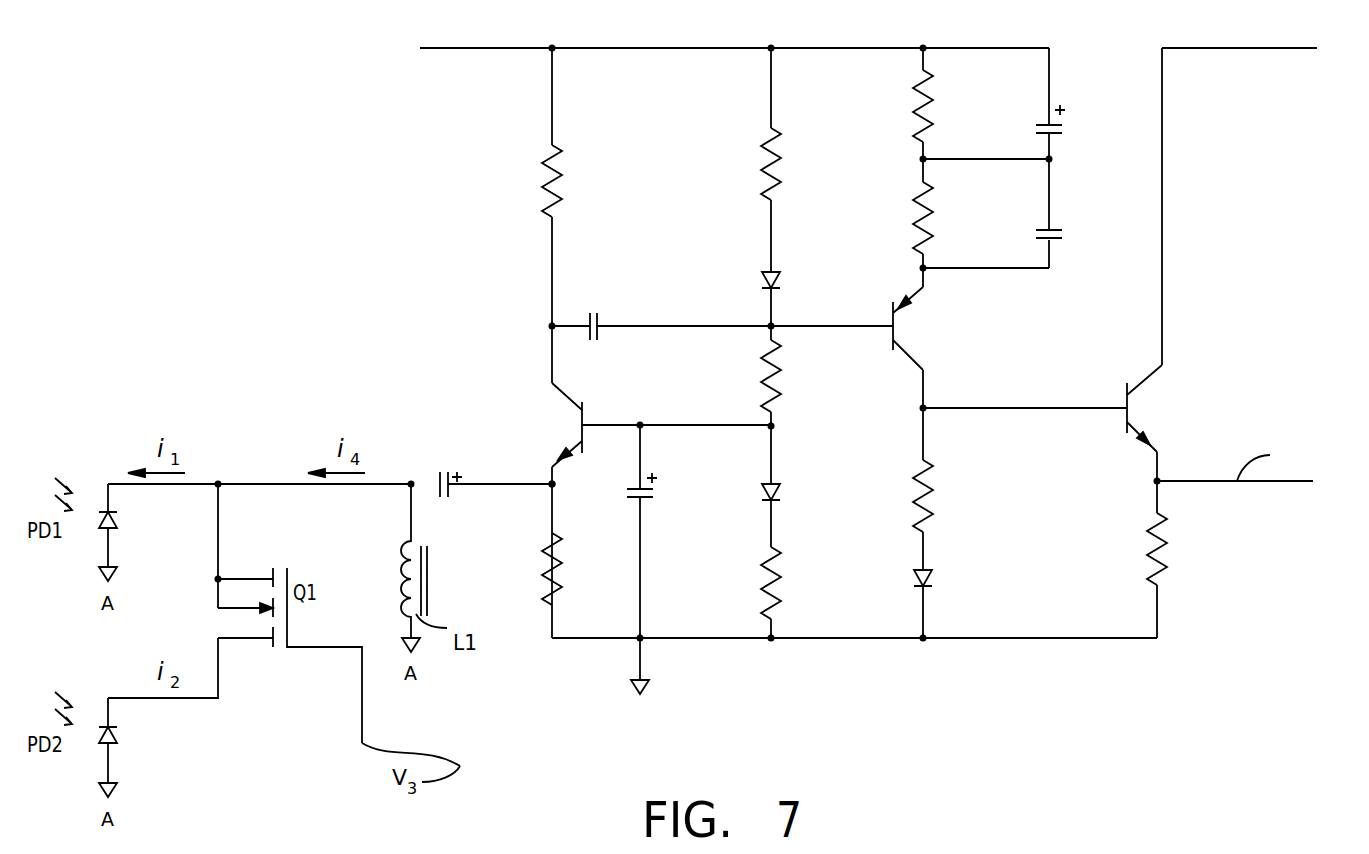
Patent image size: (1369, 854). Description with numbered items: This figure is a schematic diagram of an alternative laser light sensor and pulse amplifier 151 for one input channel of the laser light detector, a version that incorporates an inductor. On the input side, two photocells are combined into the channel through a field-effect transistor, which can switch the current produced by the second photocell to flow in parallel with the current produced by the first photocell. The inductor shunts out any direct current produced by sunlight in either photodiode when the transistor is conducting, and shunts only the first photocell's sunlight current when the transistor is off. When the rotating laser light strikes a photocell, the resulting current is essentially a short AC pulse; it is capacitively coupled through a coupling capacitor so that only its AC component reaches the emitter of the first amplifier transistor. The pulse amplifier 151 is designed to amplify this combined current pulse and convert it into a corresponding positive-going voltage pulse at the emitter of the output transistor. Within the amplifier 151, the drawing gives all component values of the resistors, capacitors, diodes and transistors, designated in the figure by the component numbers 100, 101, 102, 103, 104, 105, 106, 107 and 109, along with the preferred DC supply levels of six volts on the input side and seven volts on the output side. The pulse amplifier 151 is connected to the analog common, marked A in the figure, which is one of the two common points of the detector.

The pulse amplifier 151 is at (773, 677).
The resistor R100 / transistor Q100 100 is at (558, 306).
The resistor R101 / capacitor C101 / diode D101 / transistor Q101 101 is at (702, 446).
The resistor R102 / capacitor C102 / diode D102 / transistor Q102 102 is at (895, 368).
The resistor R103 / capacitor C103 103 is at (733, 437).
The resistor R104 / capacitor C104 104 is at (943, 362).
The resistor R105 / capacitor C105 105 is at (1019, 171).
The resistor R106 106 is at (947, 218).
The resistor R107 107 is at (947, 496).
The resistor R109 109 is at (1182, 549).